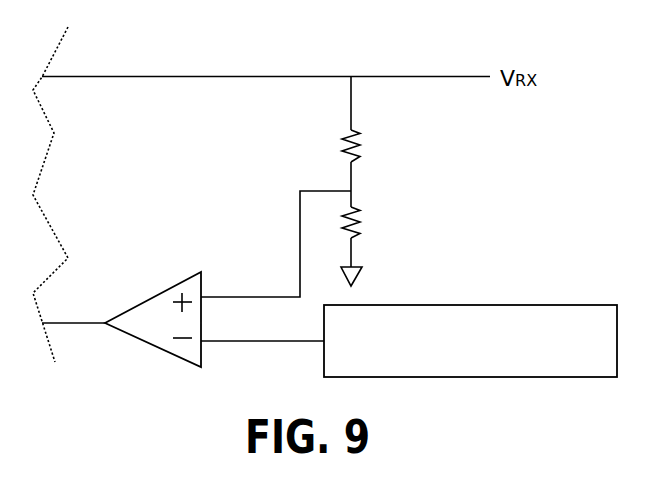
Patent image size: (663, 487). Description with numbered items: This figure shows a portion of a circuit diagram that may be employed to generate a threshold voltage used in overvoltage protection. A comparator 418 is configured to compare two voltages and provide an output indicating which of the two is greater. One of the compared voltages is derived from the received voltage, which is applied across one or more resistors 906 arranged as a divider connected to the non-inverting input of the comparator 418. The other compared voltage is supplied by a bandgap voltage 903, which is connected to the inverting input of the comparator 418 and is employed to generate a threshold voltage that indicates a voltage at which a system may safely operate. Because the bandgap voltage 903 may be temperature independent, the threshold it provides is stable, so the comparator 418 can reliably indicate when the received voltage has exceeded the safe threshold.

The comparator 418 is at (156, 293).
The resistors 906 is at (447, 189).
The bandgap voltage 903 is at (470, 341).